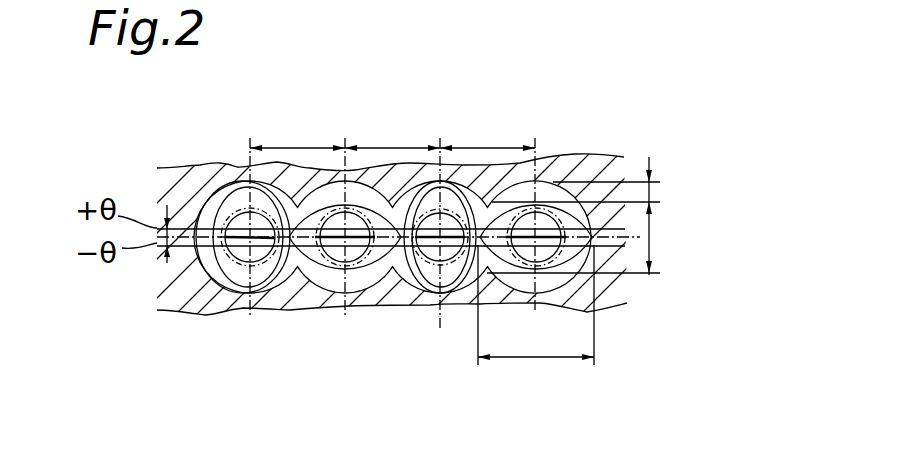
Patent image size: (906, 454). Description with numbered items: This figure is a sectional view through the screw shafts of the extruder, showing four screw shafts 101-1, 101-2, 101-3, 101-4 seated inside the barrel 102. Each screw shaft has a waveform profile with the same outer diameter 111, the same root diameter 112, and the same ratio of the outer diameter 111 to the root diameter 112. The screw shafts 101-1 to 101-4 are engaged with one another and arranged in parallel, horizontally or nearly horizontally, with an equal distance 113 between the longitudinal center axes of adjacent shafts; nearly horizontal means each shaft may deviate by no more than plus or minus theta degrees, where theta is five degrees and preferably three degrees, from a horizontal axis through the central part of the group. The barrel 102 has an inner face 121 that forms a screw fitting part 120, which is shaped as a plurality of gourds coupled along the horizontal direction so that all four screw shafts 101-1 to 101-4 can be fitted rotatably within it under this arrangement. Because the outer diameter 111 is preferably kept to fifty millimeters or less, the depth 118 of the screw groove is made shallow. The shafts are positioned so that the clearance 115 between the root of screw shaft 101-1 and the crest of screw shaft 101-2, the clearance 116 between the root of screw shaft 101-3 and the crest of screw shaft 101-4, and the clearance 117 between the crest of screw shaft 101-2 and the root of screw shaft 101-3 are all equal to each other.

The screw shaft 101-1 is at (226, 290).
The screw shaft 101-2 is at (305, 282).
The screw shaft 101-3 is at (430, 275).
The screw shaft 101-4 is at (478, 334).
The barrel 102 is at (212, 180).
The outer diameter 111 is at (529, 356).
The root diameter 112 is at (645, 244).
The distance between axial centers 113 is at (305, 145).
The clearance 115 is at (282, 294).
The clearance 116 is at (460, 270).
The clearance 117 is at (387, 306).
The depth of screw groove 118 is at (645, 186).
The screw fitting part 120 is at (197, 277).
The inner face 121 is at (364, 288).